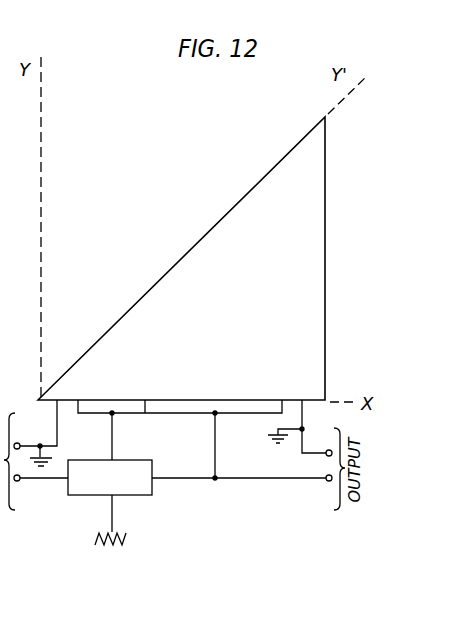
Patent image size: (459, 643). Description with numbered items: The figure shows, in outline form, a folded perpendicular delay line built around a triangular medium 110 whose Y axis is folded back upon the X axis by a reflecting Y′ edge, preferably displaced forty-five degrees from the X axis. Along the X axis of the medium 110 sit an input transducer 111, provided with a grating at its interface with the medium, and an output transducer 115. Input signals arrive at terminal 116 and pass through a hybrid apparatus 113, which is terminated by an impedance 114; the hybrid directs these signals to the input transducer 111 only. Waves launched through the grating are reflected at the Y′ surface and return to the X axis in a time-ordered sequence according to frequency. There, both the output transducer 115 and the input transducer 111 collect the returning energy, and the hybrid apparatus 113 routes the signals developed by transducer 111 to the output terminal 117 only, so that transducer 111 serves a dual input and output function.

The medium 110 is at (316, 266).
The input transducer 111 is at (128, 415).
The hybrid apparatus 113 is at (143, 496).
The impedance 114 is at (130, 542).
The output transducer 115 is at (235, 417).
The terminal 116 is at (29, 481).
The output terminal 117 is at (301, 483).